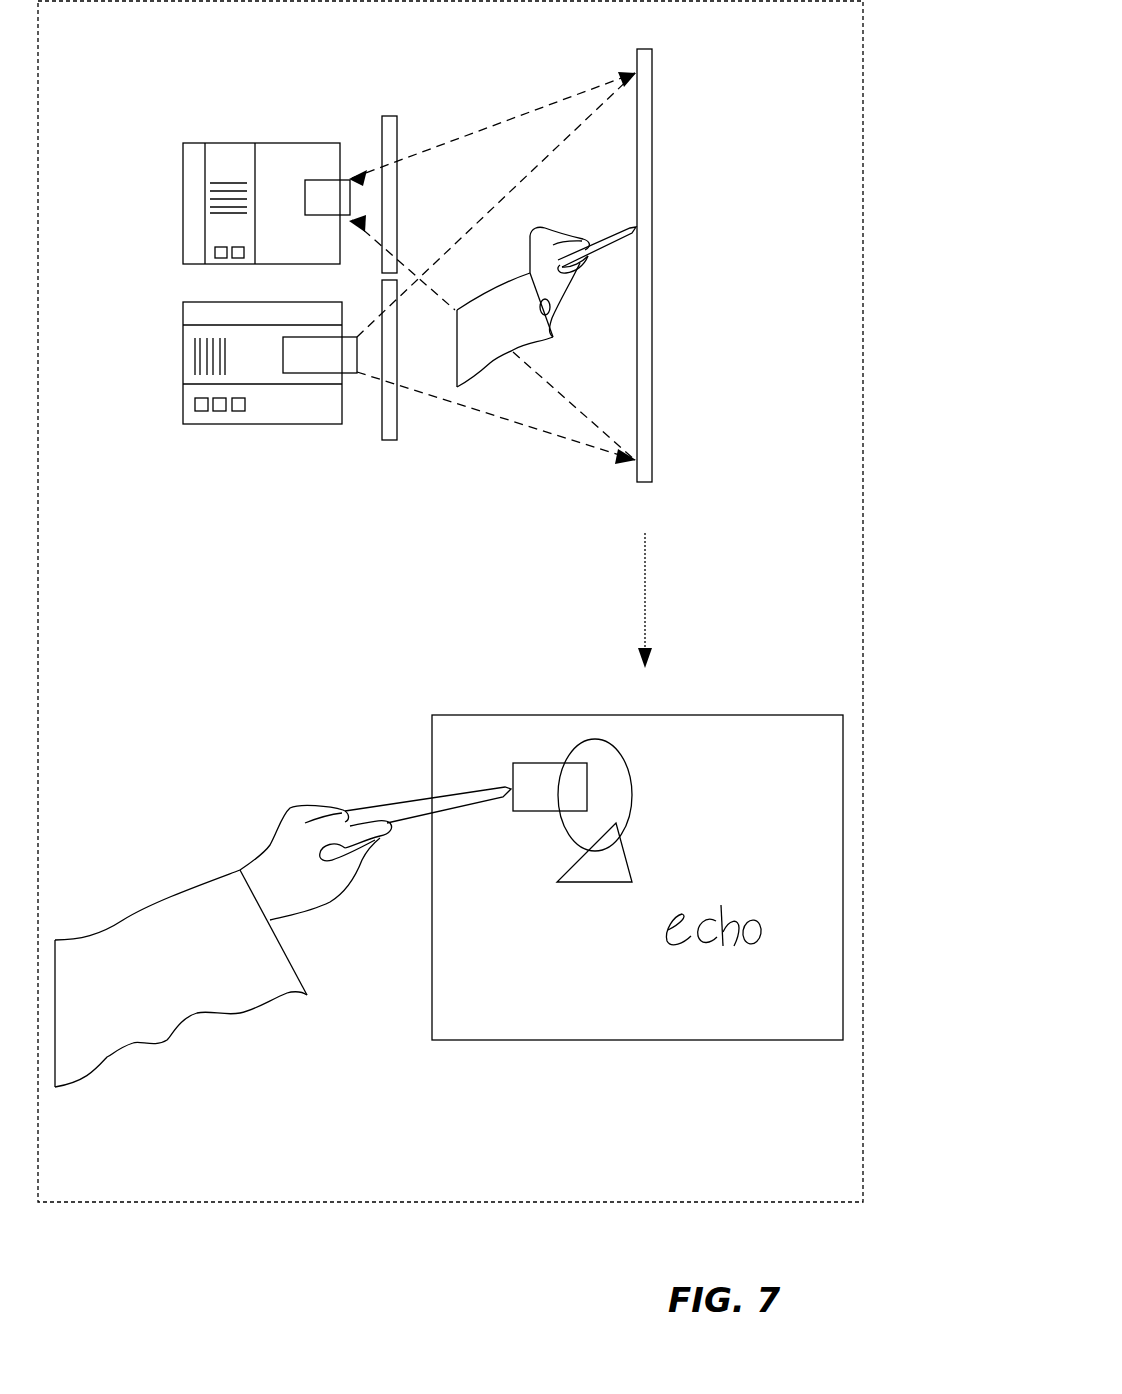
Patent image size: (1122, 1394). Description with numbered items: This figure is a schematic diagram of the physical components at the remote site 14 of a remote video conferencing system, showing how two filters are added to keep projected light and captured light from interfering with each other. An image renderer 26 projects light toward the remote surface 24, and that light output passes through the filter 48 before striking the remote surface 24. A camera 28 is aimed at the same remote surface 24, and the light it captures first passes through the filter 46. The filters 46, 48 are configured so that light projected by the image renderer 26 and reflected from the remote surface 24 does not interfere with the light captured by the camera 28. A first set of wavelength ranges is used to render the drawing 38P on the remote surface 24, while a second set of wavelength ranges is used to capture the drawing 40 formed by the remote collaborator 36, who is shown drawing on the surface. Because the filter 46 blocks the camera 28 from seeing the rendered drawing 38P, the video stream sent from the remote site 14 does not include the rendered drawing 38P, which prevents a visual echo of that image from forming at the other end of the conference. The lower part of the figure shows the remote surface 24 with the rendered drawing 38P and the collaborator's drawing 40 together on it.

The remote site 14 is at (863, 62).
The remote surface 24 is at (640, 208).
The image renderer 26 is at (300, 410).
The camera 28 is at (290, 152).
The remote collaborator 36 is at (543, 282).
The rendered drawing 38P is at (717, 927).
The drawing 40 is at (630, 803).
The filter 46 is at (390, 128).
The filter 48 is at (388, 415).